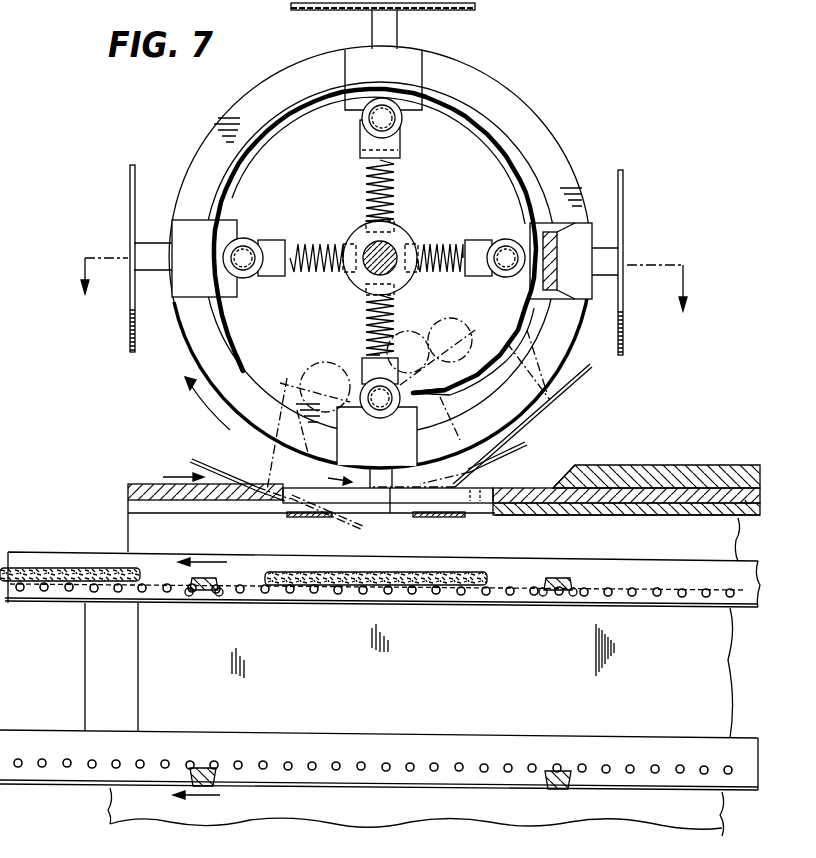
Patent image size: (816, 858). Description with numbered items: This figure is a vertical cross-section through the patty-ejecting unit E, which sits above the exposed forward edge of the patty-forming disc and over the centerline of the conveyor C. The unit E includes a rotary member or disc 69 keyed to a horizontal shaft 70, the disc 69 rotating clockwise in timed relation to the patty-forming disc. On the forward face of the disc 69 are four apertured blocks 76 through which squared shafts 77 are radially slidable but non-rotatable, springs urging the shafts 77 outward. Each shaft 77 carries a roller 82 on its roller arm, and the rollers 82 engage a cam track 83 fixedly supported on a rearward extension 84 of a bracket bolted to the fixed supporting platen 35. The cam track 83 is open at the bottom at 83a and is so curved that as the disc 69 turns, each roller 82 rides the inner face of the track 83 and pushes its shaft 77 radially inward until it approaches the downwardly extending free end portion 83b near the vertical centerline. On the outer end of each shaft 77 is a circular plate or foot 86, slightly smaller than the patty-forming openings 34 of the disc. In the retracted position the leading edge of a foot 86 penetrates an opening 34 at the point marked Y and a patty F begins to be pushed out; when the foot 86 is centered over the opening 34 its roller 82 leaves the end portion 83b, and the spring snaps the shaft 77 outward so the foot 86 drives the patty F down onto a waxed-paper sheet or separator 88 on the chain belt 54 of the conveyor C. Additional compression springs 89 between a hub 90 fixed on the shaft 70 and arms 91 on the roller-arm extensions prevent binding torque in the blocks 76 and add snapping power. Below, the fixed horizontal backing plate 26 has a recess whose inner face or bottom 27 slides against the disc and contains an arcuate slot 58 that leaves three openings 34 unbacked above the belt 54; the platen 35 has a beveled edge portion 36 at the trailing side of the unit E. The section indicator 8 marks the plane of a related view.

The rotary member or disc 69 is at (560, 137).
The horizontal shaft 70 is at (388, 248).
The apertured blocks 76 is at (350, 63).
The squared shafts 77 is at (372, 21).
The roller 82 is at (368, 125).
The cam track 83 is at (483, 137).
The open bottom of cam track 83a is at (246, 378).
The downwardly extending free end portion of cam track 83b is at (445, 372).
The rearward extension of bracket 84 is at (580, 300).
The circular plate or foot 86 is at (473, 10).
The compression springs 89 is at (335, 278).
The hub 90 is at (355, 240).
The arms 91 is at (394, 170).
The slot 58 is at (128, 490).
The patty-forming openings 34 is at (470, 492).
The supporting platen 35 is at (662, 465).
The beveled edge portion 36 is at (560, 470).
The backing plate 26 is at (660, 518).
The inner face or bottom of recess 27 is at (752, 502).
The chain belt 54 is at (665, 600).
The sheet or separator 88 is at (160, 585).
The section line 8- 8 is at (367, 295).
The patty-ejecting unit E is at (518, 84).
The conveyor C is at (636, 578).
The patty F is at (58, 572).
The leading edge penetration point Y is at (330, 478).